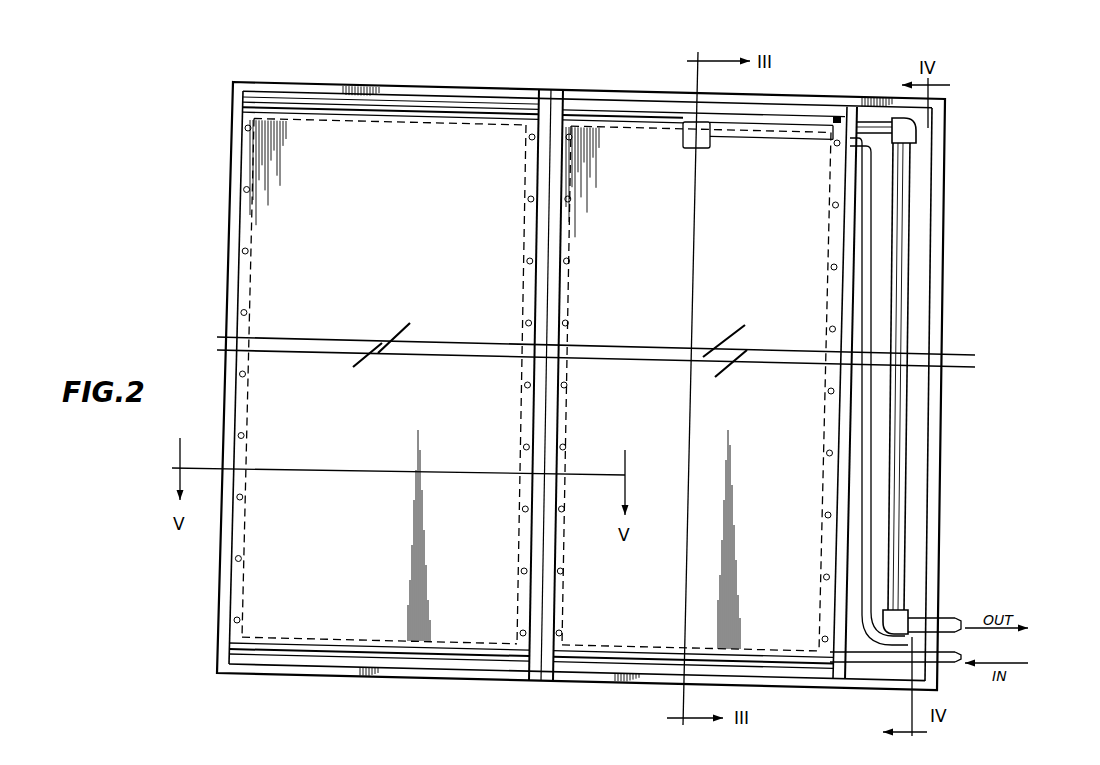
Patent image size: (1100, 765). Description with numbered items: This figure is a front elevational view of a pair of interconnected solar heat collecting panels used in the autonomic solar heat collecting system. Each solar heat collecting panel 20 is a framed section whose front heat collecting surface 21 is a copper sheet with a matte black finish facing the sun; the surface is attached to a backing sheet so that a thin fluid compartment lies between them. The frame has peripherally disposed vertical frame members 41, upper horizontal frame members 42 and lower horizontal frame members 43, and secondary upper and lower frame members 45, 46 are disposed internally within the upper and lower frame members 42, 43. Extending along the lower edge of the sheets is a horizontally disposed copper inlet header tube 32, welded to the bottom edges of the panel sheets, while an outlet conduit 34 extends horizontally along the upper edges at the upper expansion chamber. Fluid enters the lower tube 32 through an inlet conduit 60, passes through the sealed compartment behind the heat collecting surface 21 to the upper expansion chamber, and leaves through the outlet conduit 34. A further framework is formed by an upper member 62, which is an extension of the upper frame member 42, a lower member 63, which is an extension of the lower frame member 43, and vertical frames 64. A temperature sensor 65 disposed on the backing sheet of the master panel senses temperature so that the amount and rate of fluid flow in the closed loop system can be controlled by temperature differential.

The solar heat collecting panel 20 is at (496, 82).
The front heat collecting surface 21 is at (384, 281).
The lower inlet header tube 32 is at (787, 657).
The outlet conduit 34 is at (787, 120).
The vertical frame members 41 is at (238, 318).
The upper horizontal frame members 42 is at (382, 93).
The lower horizontal frame members 43 is at (337, 667).
The secondary upper frame member 45 is at (302, 98).
The secondary lower frame member 46 is at (282, 657).
The inlet conduit 60 is at (897, 660).
The upper member 62 is at (887, 103).
The lower member 63 is at (863, 677).
The vertical frames 64 is at (938, 390).
The temperature sensor 65 is at (707, 148).